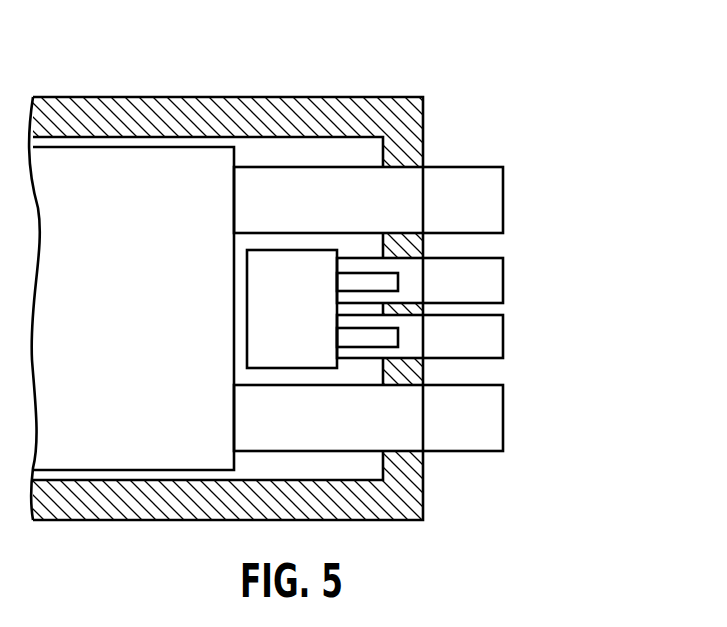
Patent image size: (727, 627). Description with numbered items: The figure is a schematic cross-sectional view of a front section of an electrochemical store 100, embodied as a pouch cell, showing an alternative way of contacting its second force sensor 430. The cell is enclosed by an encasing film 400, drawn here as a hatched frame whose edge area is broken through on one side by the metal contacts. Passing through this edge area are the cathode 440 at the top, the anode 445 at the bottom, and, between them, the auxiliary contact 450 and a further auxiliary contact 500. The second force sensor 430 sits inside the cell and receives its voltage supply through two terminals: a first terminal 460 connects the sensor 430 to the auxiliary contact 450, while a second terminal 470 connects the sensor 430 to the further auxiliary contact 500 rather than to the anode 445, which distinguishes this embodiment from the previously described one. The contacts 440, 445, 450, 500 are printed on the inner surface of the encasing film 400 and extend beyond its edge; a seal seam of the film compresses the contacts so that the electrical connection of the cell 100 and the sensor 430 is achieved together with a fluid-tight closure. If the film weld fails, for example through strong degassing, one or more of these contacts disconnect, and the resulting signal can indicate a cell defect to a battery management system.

The electrochemical store 100 is at (517, 103).
The encasing film 400 is at (63, 108).
The second force sensor 430 is at (260, 249).
The cathode 440 is at (480, 200).
The anode 445 is at (480, 418).
The auxiliary contact 450 is at (480, 282).
The further auxiliary contact 500 is at (480, 336).
The first terminal 460 is at (388, 282).
The second terminal 470 is at (388, 337).